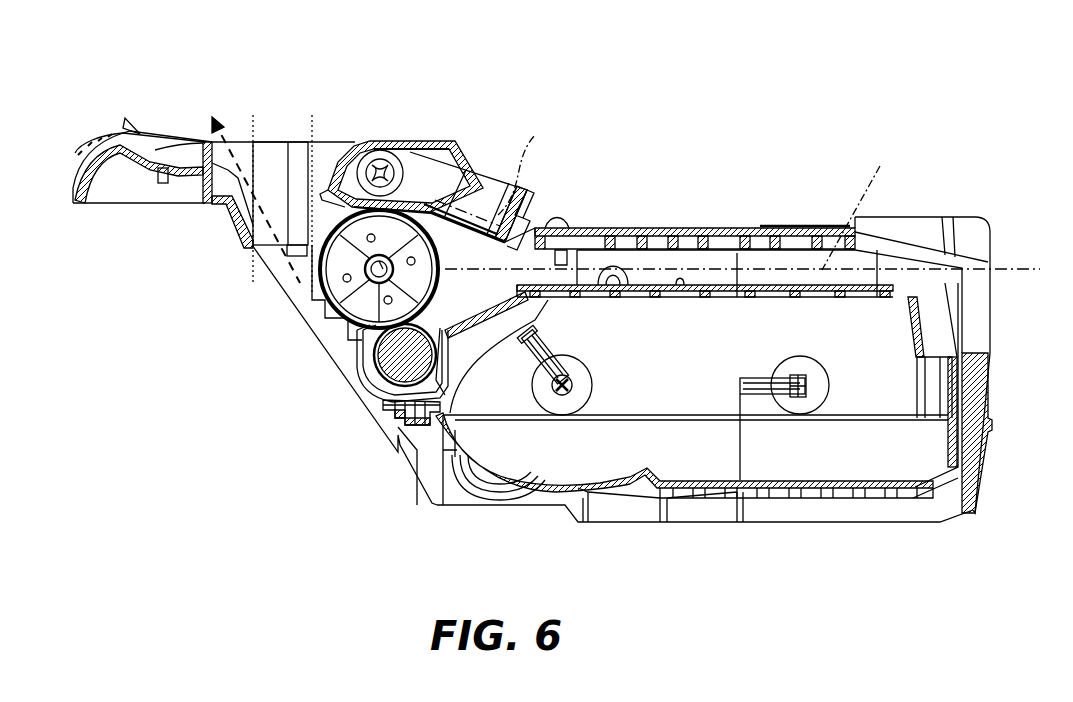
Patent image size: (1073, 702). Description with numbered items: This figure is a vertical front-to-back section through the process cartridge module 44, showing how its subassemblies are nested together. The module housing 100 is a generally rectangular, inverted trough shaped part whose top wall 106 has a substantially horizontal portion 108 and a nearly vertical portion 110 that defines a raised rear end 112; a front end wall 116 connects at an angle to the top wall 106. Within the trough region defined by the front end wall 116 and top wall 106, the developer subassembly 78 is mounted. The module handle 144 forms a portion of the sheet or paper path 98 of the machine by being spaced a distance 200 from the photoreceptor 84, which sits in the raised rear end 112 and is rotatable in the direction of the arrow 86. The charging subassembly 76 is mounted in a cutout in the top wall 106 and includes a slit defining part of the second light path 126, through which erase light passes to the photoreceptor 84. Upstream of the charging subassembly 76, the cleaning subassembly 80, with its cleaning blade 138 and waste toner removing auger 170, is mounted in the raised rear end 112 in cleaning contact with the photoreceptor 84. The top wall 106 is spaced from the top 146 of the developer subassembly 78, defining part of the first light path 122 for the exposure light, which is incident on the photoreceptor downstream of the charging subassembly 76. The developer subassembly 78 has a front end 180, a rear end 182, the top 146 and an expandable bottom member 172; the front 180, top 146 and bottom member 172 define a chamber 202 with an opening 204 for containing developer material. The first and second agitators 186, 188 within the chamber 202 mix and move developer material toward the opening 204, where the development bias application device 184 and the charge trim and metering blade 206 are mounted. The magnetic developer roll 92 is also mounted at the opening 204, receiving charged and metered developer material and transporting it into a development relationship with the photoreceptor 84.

The process cartridge module 44 is at (776, 70).
The distance 200 is at (282, 126).
The raised rear end 112 is at (253, 127).
The cleaning subassembly 80 is at (346, 140).
The waste toner removing auger 170 is at (380, 155).
The cleaning blade 138 is at (406, 160).
The nearly vertical portion 110 is at (447, 163).
The second light path 126 is at (497, 167).
The charging subassembly 76 is at (512, 212).
The module housing 100 is at (614, 218).
The top wall 106 is at (700, 228).
The horizontal portion 108 is at (786, 228).
The first light path 122 is at (855, 206).
The module handle 144 is at (126, 214).
The paper path 98 is at (295, 273).
The photoreceptor 84 is at (358, 301).
The arrow 86 is at (347, 318).
The rear end 182 is at (357, 343).
The magnetic developer roll 92 is at (376, 362).
The charge trim and metering blade 206 is at (440, 367).
The opening 204 is at (450, 392).
The development bias application device 184 is at (493, 344).
The first agitator 186 is at (556, 355).
The top 146 is at (678, 286).
The second agitator 188 is at (758, 378).
The chamber 202 is at (677, 399).
The front end 180 is at (947, 440).
The front end wall 116 is at (985, 455).
The developer subassembly 78 is at (688, 510).
The expandable bottom member 172 is at (820, 500).